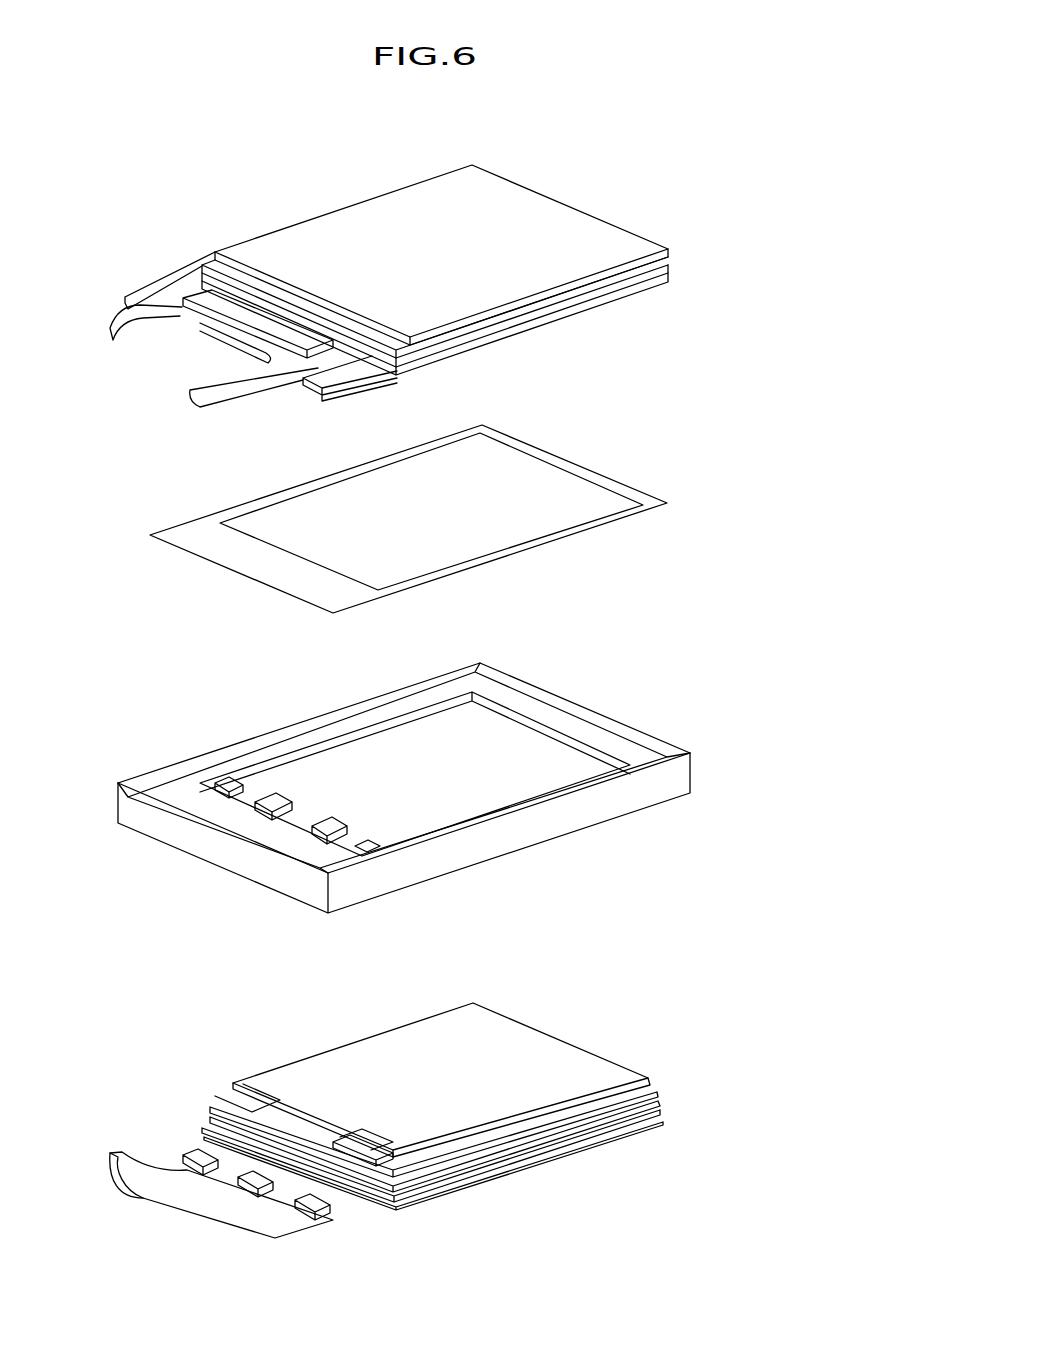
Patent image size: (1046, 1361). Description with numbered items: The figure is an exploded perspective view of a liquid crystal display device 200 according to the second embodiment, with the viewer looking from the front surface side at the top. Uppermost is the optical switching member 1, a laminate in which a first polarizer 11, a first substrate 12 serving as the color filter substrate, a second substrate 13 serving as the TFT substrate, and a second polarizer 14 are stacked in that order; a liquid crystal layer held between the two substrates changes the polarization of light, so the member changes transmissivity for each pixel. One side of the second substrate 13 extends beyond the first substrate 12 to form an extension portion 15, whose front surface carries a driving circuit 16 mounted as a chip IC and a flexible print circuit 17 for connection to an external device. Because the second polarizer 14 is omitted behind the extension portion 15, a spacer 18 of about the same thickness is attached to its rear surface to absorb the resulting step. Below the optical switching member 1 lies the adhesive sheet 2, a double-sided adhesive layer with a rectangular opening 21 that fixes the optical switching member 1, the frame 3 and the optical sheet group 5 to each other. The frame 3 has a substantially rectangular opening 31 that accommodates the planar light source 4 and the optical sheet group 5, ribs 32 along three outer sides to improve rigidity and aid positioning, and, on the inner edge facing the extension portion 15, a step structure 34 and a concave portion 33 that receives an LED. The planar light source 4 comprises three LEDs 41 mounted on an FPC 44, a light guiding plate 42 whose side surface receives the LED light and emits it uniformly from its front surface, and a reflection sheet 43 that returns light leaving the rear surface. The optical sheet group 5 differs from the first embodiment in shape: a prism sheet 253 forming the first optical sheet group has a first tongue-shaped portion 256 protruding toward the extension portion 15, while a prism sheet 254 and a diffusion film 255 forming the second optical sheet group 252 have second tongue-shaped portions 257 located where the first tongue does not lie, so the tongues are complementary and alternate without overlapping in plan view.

The liquid crystal display device 200 is at (716, 135).
The optical switching member 1 is at (243, 172).
The first polarizer 11 is at (672, 249).
The first substrate 12 is at (672, 260).
The second substrate 13 is at (672, 269).
The second polarizer 14 is at (672, 279).
The extension portion 15 is at (190, 268).
The driving circuit 16 is at (213, 302).
The flexible print circuit (FPC) 17 is at (233, 400).
The spacer 18 is at (368, 392).
The FPC 44 is at (112, 326).
The adhesive sheet 2 is at (285, 470).
The opening 21 is at (540, 470).
The frame 3 is at (252, 695).
The opening 31 is at (545, 722).
The ribs 32 is at (440, 675).
The concave portion 33 is at (295, 822).
The step structure 34 is at (345, 838).
The planar light source 4 is at (593, 1203).
The optical sheet group 5 is at (812, 997).
The second optical sheet group 252 is at (738, 1030).
The prism sheet 253 is at (613, 1062).
The prism sheet 254 is at (648, 1087).
The diffusion film 255 is at (655, 1102).
The first tongue-shaped portion 256 is at (300, 1122).
The second tongue-shaped portions 257 is at (385, 1162).
The LEDs 41 is at (195, 1172).
The light guiding plate 42 is at (662, 1112).
The reflection sheet 43 is at (633, 1135).